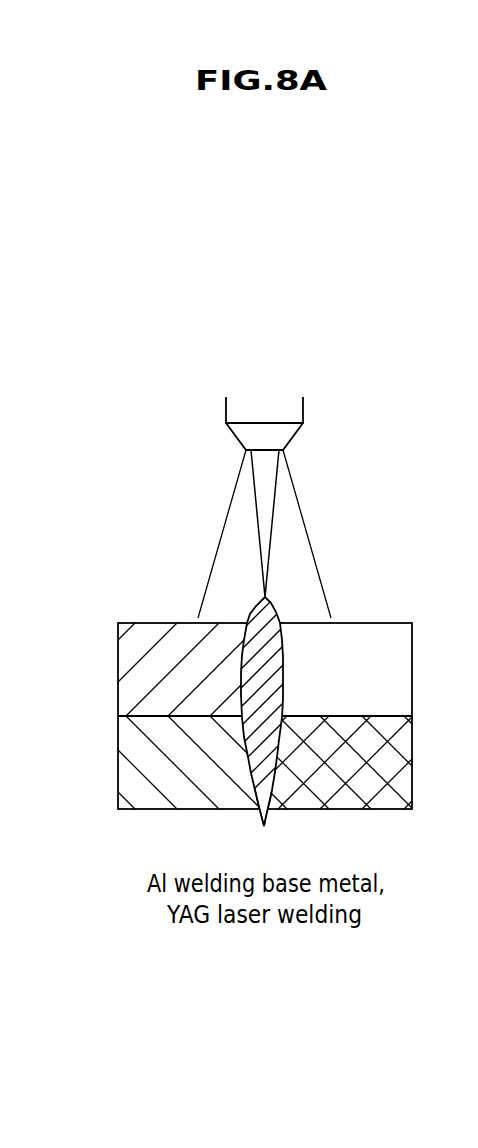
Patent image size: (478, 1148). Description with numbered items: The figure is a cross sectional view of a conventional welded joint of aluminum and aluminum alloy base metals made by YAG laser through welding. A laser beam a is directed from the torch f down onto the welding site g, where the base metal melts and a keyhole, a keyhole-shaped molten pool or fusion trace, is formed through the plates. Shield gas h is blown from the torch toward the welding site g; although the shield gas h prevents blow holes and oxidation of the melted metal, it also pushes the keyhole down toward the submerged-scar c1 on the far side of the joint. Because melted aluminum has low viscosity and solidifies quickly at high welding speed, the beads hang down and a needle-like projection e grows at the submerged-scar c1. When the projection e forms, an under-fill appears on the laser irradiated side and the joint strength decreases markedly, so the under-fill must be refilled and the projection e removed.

The laser welding head (nozzle) f is at (303, 410).
The laser beam a is at (269, 500).
The shield gas h is at (333, 576).
The welding site g is at (254, 609).
The submerged-scar c1 is at (258, 824).
The needle-like projection e is at (277, 824).